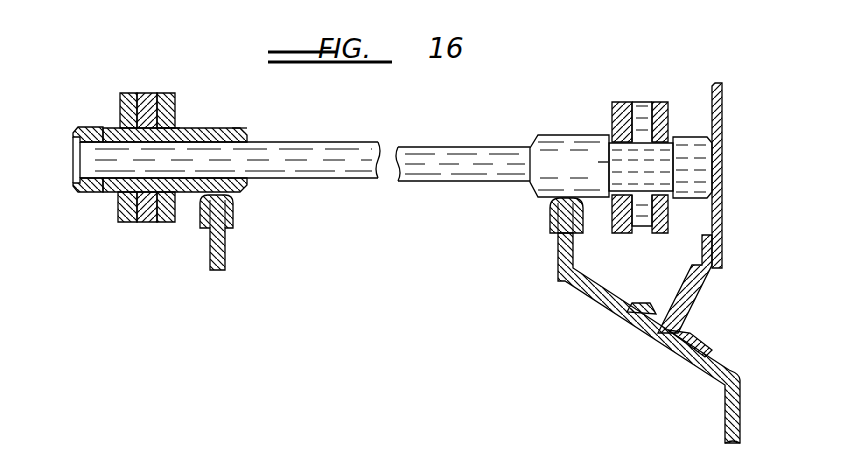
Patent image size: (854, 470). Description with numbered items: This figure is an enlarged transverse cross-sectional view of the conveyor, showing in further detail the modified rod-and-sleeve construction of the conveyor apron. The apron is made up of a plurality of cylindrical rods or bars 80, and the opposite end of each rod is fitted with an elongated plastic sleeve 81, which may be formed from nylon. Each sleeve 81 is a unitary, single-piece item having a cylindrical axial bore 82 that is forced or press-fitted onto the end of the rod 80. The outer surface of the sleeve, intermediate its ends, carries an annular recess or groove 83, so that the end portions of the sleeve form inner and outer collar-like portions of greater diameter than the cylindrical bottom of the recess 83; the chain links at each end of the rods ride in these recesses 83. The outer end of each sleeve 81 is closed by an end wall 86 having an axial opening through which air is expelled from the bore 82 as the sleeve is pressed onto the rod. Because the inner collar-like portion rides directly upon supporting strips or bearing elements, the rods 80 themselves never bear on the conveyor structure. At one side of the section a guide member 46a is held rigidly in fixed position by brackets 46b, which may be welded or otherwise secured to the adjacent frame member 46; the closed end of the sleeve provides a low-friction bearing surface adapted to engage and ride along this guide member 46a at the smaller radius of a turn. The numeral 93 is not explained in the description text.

The frame member 46 is at (608, 312).
The guide member 46a is at (722, 220).
The brackets 46b is at (693, 303).
The cylindrical rods or bars 80 is at (463, 146).
The sleeve 81 is at (250, 127).
The cylindrical axial bore 82 is at (249, 148).
The annular recess or groove 83 is at (169, 128).
The end wall 86 is at (74, 151).
The hub 93 is at (598, 162).